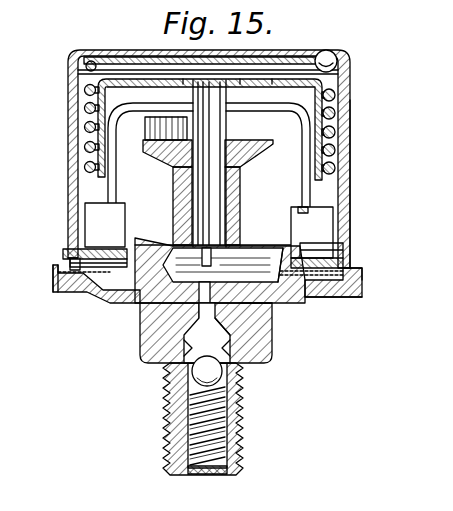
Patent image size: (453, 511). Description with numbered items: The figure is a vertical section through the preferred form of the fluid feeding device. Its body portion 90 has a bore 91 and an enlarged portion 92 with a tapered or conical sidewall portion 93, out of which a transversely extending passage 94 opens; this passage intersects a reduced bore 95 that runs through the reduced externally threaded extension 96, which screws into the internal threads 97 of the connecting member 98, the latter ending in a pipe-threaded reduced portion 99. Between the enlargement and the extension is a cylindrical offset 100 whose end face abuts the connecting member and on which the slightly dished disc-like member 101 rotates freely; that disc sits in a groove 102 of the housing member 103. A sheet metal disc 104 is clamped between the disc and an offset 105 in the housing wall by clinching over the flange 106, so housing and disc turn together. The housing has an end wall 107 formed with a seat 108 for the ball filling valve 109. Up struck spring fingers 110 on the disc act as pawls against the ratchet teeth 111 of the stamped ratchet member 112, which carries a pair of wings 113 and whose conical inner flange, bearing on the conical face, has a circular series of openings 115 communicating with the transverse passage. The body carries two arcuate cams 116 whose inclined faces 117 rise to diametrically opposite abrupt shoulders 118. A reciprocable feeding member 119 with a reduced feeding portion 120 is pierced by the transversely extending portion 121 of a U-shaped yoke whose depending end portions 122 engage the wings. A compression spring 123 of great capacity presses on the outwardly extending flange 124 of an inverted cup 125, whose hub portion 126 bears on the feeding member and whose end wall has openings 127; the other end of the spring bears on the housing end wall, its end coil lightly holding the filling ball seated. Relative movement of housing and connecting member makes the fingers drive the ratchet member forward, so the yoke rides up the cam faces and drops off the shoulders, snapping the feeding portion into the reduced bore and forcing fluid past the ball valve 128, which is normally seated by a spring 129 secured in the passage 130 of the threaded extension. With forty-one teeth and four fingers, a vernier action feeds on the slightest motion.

The body portion 90 is at (178, 193).
The bore 91 is at (242, 172).
The enlarged portion 92 is at (135, 310).
The tapered or conical sidewall portion 93 is at (170, 224).
The transversely extending passage 94 is at (284, 224).
The reduced bore 95 is at (182, 350).
The reduced externally threaded extension 96 is at (175, 365).
The internal threads 97 is at (250, 355).
The connecting member 98 is at (250, 370).
The reduced externally threaded portion 99 is at (245, 457).
The cylindrical offset 100 is at (250, 303).
The disc-like member 101 is at (108, 298).
The groove 102 is at (362, 289).
The housing member 103 is at (353, 172).
The sheet metal disc 104 is at (345, 268).
The offset 105 is at (352, 272).
The flange 106 is at (348, 298).
The end wall 107 is at (138, 57).
The seat 108 is at (320, 54).
The ball filling valve 109 is at (332, 52).
The up struck spring fingers 110 is at (55, 272).
The ratchet teeth 111 is at (92, 258).
The ratchet member 112 is at (100, 252).
The fingers or wings 113 is at (97, 215).
The openings 115 is at (293, 250).
The cams 116 is at (170, 125).
The inclined faces 117 is at (243, 128).
The abrupt shoulder 118 is at (150, 127).
The reciprocable feeding member 119 is at (210, 160).
The reduced feeding portion 120 is at (215, 288).
The transversely extending portion 121 is at (272, 82).
The depending end portions 122 is at (112, 161).
The compression spring 123 is at (336, 93).
The outwardly extending flange 124 is at (352, 157).
The inverted cup 125 is at (320, 117).
The central or hub portion 126 is at (190, 83).
The openings 127 is at (273, 81).
The ball valve 128 is at (163, 385).
The spring 129 is at (175, 452).
The passage 130 is at (245, 437).